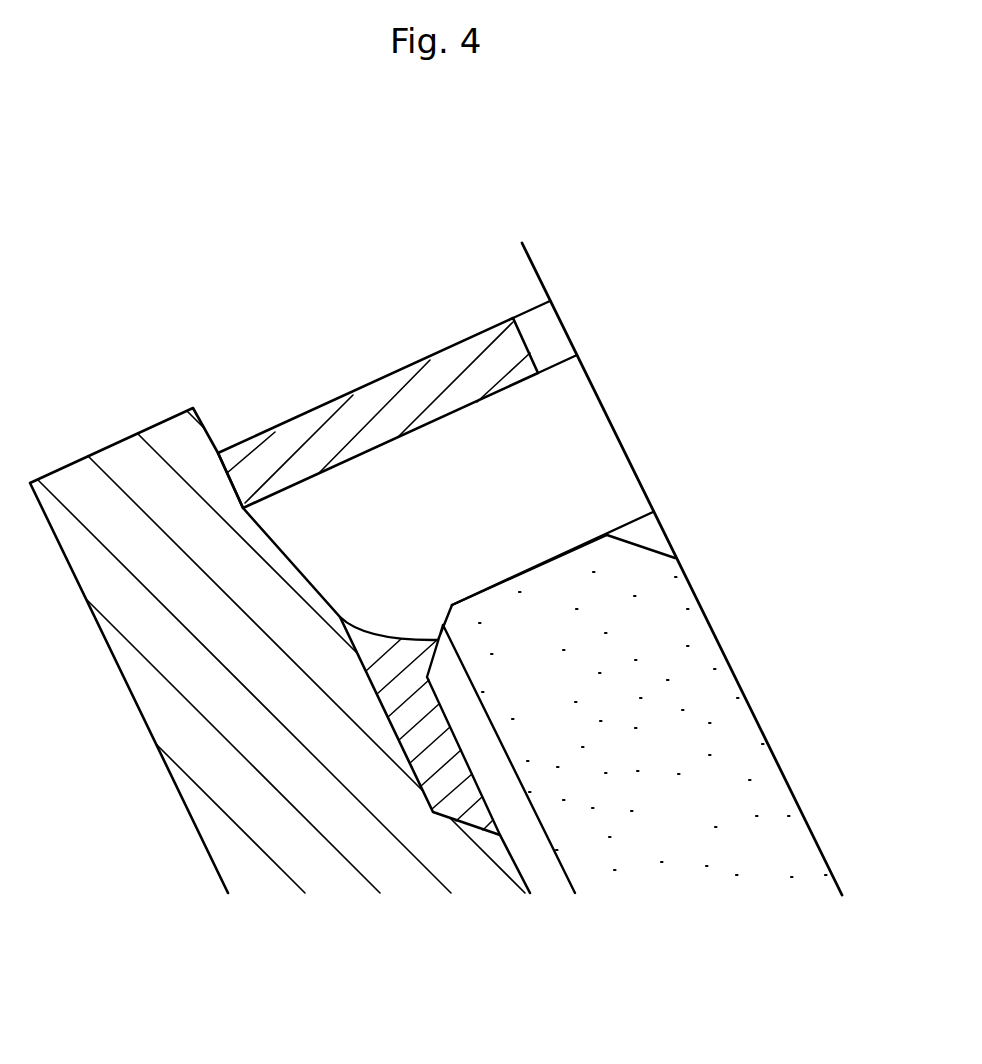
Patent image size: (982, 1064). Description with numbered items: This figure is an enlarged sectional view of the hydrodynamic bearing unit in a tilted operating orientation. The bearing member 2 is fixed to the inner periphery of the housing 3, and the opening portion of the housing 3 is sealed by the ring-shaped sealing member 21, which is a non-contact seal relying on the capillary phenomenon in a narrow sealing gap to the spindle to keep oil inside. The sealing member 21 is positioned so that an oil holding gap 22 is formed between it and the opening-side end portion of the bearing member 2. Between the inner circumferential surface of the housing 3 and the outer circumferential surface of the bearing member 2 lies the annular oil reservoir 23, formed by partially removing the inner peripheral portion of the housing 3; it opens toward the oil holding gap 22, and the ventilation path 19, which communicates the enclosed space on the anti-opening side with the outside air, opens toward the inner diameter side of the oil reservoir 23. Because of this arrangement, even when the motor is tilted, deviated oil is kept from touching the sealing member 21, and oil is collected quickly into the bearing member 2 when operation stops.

The bearing member 2 is at (717, 692).
The housing 3 is at (162, 705).
The ventilation path 19 is at (530, 853).
The sealing member 21 is at (382, 392).
The oil holding gap 22 is at (587, 430).
The oil reservoir 23 is at (410, 747).